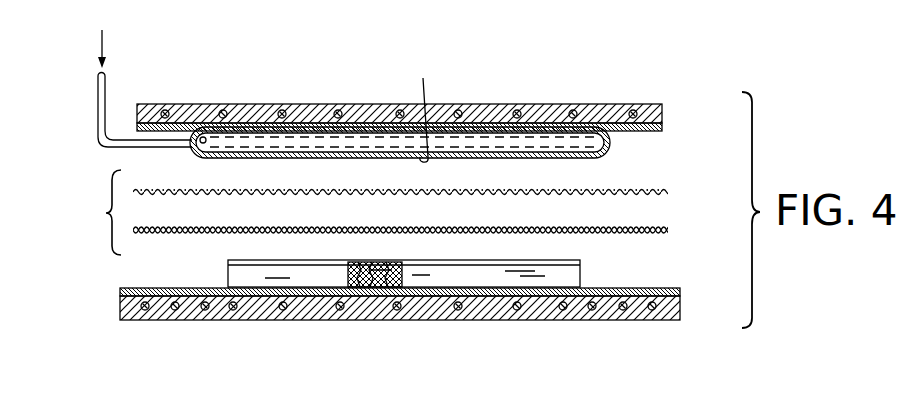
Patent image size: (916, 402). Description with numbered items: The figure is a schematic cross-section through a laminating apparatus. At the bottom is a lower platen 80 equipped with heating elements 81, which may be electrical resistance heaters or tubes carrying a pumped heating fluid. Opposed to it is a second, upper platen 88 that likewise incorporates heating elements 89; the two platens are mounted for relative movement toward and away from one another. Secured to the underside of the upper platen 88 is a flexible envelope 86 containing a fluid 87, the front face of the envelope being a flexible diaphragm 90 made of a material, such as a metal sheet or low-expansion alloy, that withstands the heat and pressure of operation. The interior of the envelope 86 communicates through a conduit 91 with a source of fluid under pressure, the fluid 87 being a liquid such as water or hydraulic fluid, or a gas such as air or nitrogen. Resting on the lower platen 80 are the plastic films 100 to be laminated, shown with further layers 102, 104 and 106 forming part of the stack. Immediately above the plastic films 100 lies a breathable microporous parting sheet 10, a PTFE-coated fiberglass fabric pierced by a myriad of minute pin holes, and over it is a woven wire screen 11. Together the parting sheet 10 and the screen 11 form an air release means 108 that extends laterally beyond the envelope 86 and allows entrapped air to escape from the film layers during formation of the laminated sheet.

The breathable microporous parting sheet 10 is at (668, 230).
The woven wire cloth or screen 11 is at (668, 192).
The lower platen 80 is at (306, 310).
The heating elements 81 is at (233, 310).
The flexible envelope 86 is at (622, 144).
The fluid 87 is at (590, 143).
The second platen 88 is at (596, 120).
The heating elements 89 is at (213, 108).
The flexible diaphragm 90 is at (422, 109).
The conduit 91 is at (99, 105).
The plastic films 100 is at (218, 271).
The cover layer 102 is at (573, 283).
The patch 104 is at (412, 275).
The adhesive layer 106 is at (480, 265).
The air release means 108 is at (108, 196).